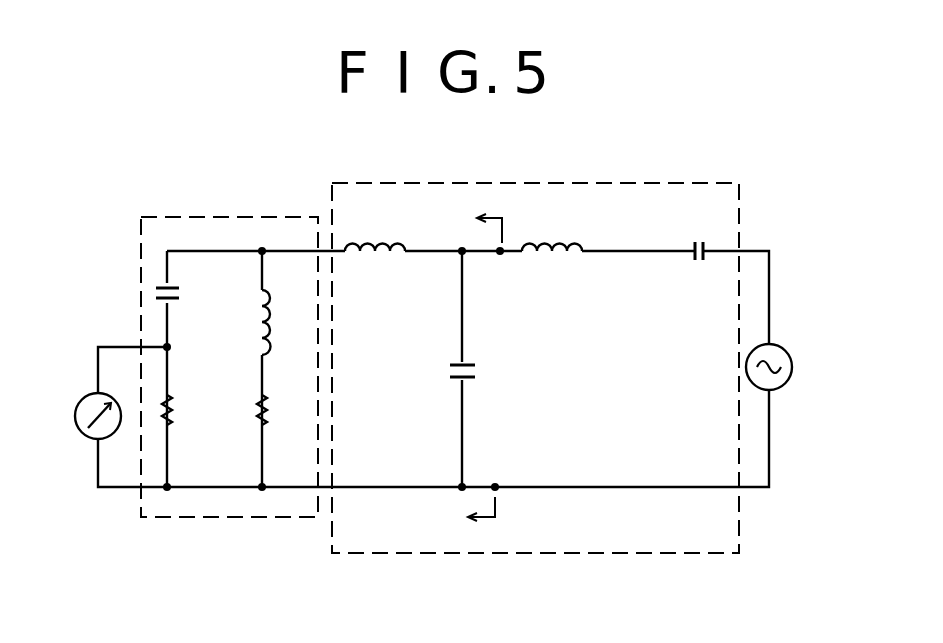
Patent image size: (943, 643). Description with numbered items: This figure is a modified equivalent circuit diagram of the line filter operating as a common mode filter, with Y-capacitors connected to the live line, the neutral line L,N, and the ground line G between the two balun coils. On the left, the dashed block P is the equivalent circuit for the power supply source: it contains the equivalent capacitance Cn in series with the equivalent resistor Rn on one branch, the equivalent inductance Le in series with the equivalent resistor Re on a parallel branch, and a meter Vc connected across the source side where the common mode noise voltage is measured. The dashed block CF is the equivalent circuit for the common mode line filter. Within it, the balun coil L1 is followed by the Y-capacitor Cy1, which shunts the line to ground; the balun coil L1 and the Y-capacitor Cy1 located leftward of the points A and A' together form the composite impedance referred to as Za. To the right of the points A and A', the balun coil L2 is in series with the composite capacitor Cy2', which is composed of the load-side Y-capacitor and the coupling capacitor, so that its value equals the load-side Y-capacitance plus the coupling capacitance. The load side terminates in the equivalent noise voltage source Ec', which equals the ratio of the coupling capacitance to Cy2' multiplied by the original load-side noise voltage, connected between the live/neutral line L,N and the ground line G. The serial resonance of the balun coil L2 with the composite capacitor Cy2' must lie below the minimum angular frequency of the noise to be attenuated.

The equivalent circuit for the power supply source P is at (231, 217).
The equivalent circuit for the common mode line filter CF is at (553, 183).
The voltmeter Vc is at (75, 416).
The equivalent capacitance Cn is at (191, 295).
The equivalent resistor Rn is at (189, 413).
The equivalent inductance Le is at (286, 322).
The equivalent resistor Re is at (283, 413).
The balun coil L1 is at (375, 225).
The balun coil L2 is at (552, 225).
The point A is at (494, 253).
The point A' is at (491, 481).
The Y-capacitor Cy1 is at (491, 369).
The composite capacitor Cy2' is at (689, 227).
The live line and neutral line L,N is at (752, 251).
The equivalent noise voltage Ec' is at (793, 367).
The ground line G is at (752, 489).